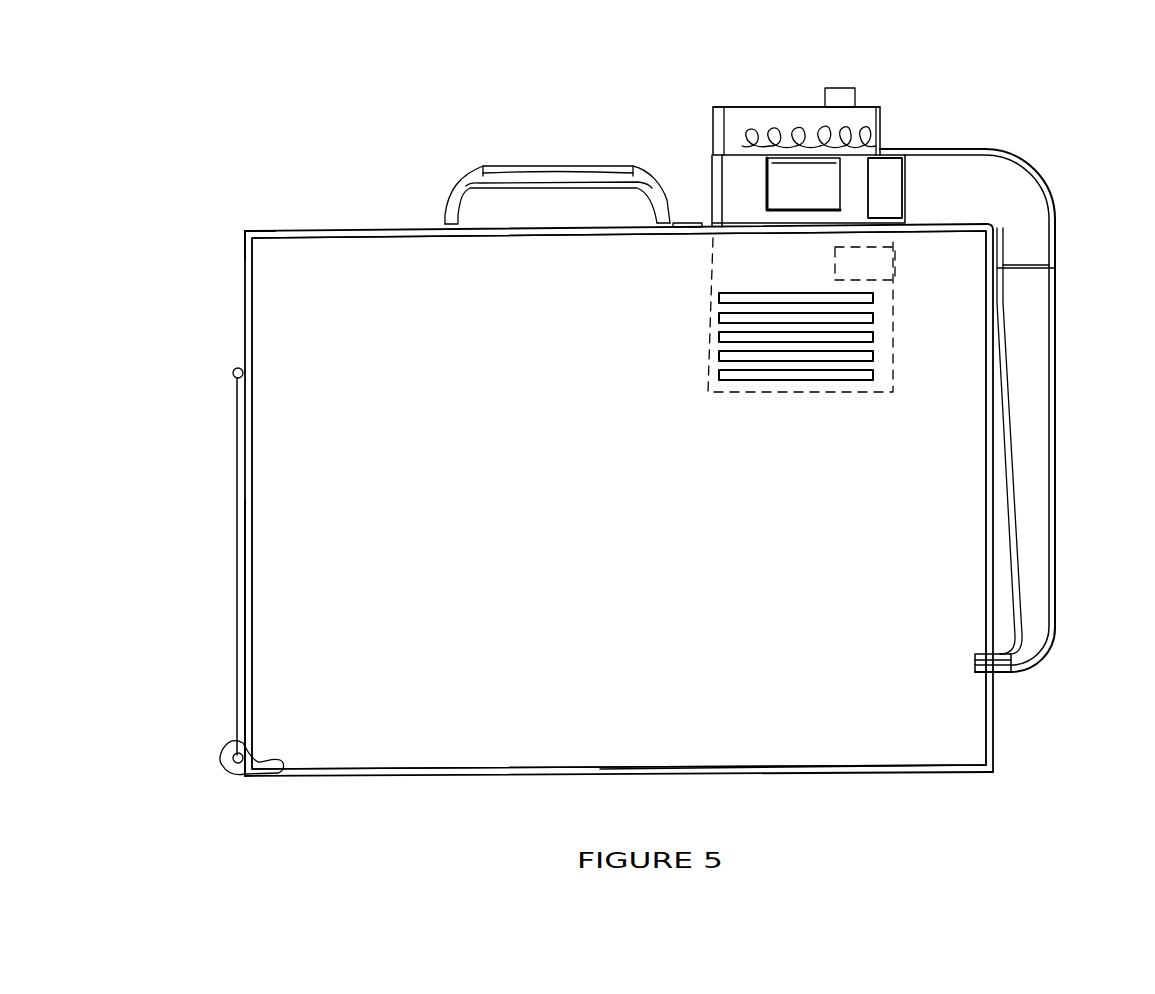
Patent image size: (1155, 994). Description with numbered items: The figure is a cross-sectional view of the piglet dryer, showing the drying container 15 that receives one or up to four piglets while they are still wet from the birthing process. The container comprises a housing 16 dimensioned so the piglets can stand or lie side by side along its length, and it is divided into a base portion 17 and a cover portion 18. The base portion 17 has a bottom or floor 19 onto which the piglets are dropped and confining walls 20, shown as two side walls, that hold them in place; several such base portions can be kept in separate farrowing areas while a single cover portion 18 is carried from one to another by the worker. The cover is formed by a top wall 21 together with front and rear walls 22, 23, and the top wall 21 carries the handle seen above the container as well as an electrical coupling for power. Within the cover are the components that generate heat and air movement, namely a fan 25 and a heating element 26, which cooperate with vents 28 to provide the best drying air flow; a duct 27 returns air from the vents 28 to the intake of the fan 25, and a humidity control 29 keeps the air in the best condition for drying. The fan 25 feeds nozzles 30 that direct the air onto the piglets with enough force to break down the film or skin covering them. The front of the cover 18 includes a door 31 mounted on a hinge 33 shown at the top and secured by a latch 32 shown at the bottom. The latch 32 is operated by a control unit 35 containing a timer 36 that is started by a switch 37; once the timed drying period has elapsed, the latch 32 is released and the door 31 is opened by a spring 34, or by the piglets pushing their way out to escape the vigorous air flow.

The drying container 15 is at (231, 226).
The housing 16 is at (986, 723).
The base portion 17 is at (693, 740).
The cover portion 18 is at (233, 244).
The floor 19 is at (560, 768).
The confining walls 20 is at (325, 508).
The top wall 21 is at (298, 233).
The front wall 22 is at (247, 285).
The rear wall 23 is at (988, 522).
The fan 25 is at (812, 188).
The heating element 26 is at (747, 142).
The duct 27 is at (740, 262).
The vents 28 is at (845, 372).
The humidity control 29 is at (875, 265).
The nozzles 30 is at (1008, 673).
The door 31 is at (243, 580).
The latch 32 is at (225, 768).
The hinge 33 is at (138, 436).
The spring 34 is at (233, 378).
The control unit 35 is at (789, 105).
The timer 36 is at (762, 107).
The switch 37 is at (843, 88).